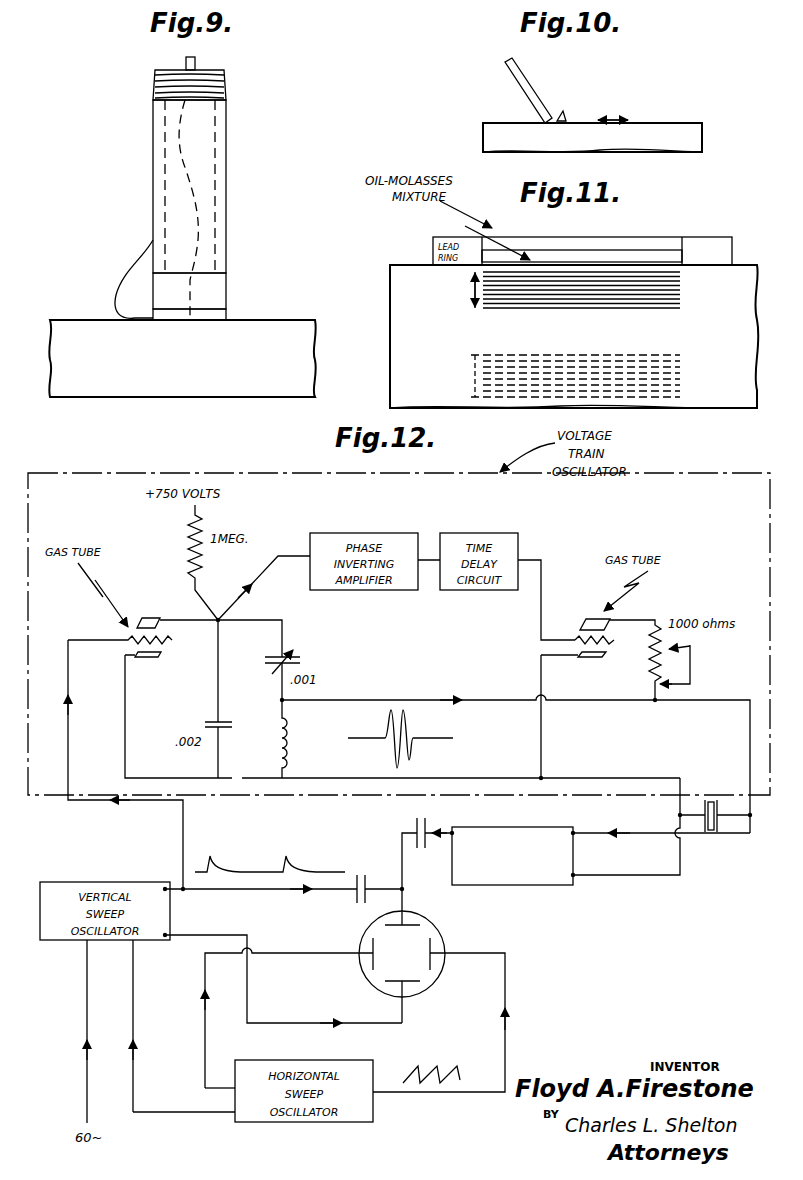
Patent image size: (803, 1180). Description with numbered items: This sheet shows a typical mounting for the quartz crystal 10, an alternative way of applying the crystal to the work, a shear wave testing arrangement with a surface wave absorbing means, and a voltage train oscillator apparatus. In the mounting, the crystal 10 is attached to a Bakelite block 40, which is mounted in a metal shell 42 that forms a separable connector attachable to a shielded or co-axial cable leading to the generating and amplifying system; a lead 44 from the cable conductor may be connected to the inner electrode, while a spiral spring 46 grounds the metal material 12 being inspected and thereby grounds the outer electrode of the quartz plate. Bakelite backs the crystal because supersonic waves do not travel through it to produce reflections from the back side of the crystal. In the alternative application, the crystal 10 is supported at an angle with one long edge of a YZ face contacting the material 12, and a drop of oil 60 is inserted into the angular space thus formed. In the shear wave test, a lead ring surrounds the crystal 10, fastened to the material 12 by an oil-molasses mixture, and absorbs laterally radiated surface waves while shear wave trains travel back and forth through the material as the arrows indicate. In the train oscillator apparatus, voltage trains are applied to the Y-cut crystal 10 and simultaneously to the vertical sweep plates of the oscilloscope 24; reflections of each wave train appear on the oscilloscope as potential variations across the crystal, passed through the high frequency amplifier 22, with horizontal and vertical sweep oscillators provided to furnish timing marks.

In FIG. 9, the crystal 10 is at (214, 318).
In FIG. 10, the crystal 10 is at (525, 87).
In FIG. 11, the crystal 10 is at (592, 256).
In FIG. 12, the crystal 10 is at (714, 835).
In FIG. 9, the material 12 is at (188, 383).
In FIG. 11, the material 12 is at (407, 278).
In FIG. 12, the high frequency amplifier 22 is at (510, 829).
In FIG. 12, the oscilloscope 24 is at (433, 932).
In FIG. 9, the Bakelite block 40 is at (226, 281).
In FIG. 9, the metal shell 42 is at (226, 195).
In FIG. 9, the lead 44 is at (185, 156).
In FIG. 9, the spiral spring 46 is at (126, 274).
In FIG. 10, the drop of oil 60 is at (565, 117).